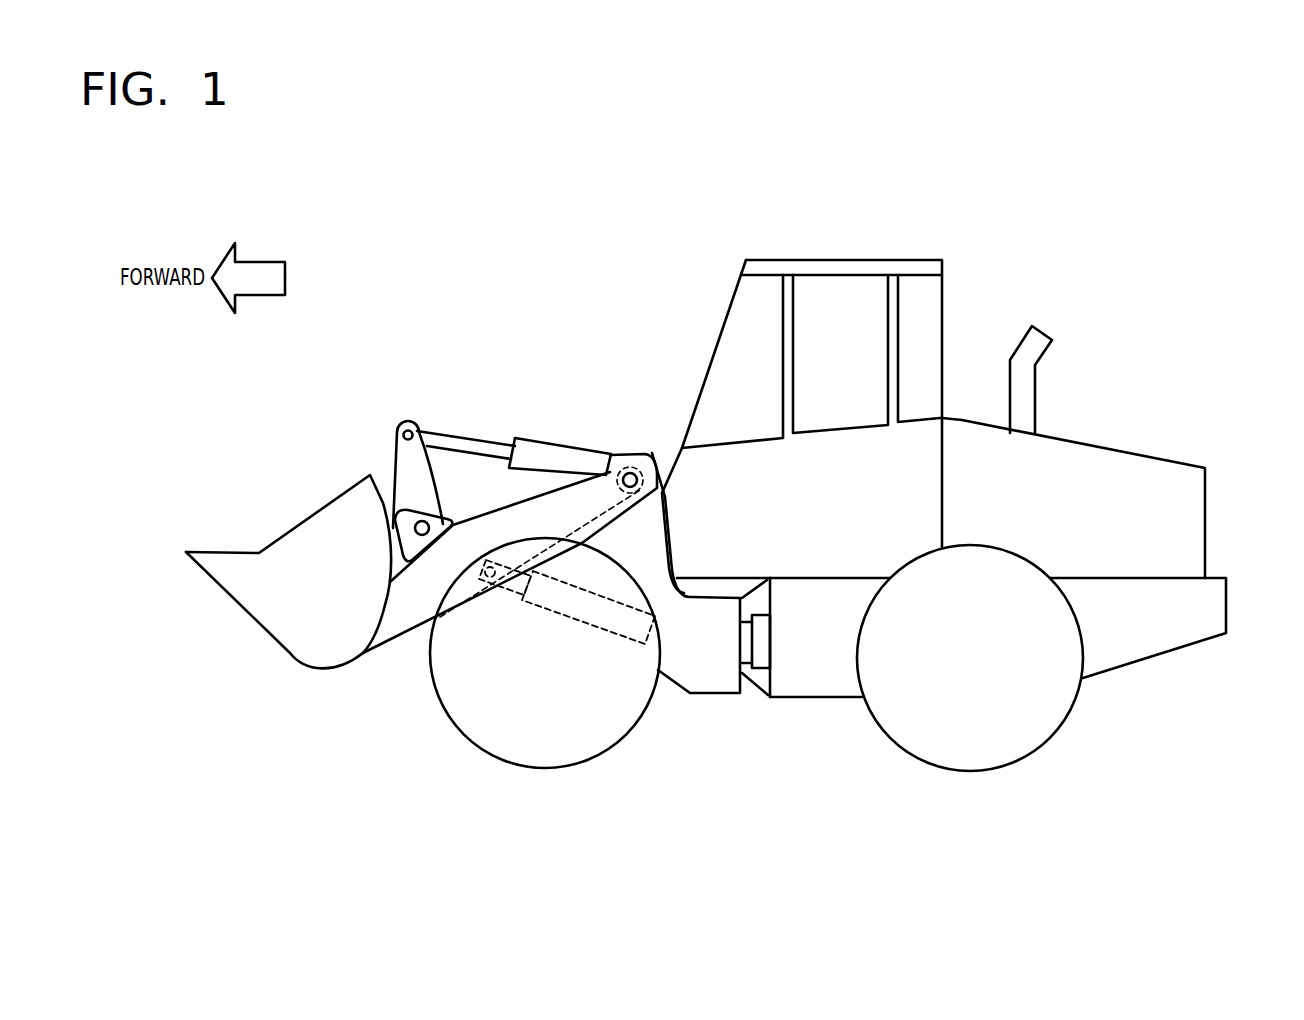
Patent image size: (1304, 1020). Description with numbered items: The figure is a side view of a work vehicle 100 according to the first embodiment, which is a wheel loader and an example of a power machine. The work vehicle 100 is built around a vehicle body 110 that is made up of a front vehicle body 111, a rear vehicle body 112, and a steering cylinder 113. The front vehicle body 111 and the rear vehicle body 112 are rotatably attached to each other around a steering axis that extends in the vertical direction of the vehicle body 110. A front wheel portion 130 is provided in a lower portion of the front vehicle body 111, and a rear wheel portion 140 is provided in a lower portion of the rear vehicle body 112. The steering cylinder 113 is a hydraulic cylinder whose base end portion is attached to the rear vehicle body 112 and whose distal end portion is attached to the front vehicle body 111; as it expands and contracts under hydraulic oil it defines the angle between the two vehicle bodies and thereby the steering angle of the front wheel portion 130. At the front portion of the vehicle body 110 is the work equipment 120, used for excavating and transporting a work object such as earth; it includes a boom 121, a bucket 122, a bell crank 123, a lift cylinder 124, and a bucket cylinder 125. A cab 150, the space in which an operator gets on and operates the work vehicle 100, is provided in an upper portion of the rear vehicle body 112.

The work vehicle 100 is at (1061, 205).
The vehicle body 110 is at (730, 805).
The front vehicle body 111 is at (710, 697).
The rear vehicle body 112 is at (837, 698).
The steering cylinder 113 is at (762, 686).
The work equipment 120 is at (284, 438).
The boom 121 is at (393, 640).
The bucket 122 is at (283, 660).
The bell crank 123 is at (402, 422).
The lift cylinder 124 is at (567, 620).
The bucket cylinder 125 is at (542, 443).
The front wheel portion 130 is at (527, 767).
The rear wheel portion 140 is at (958, 773).
The cab 150 is at (785, 260).